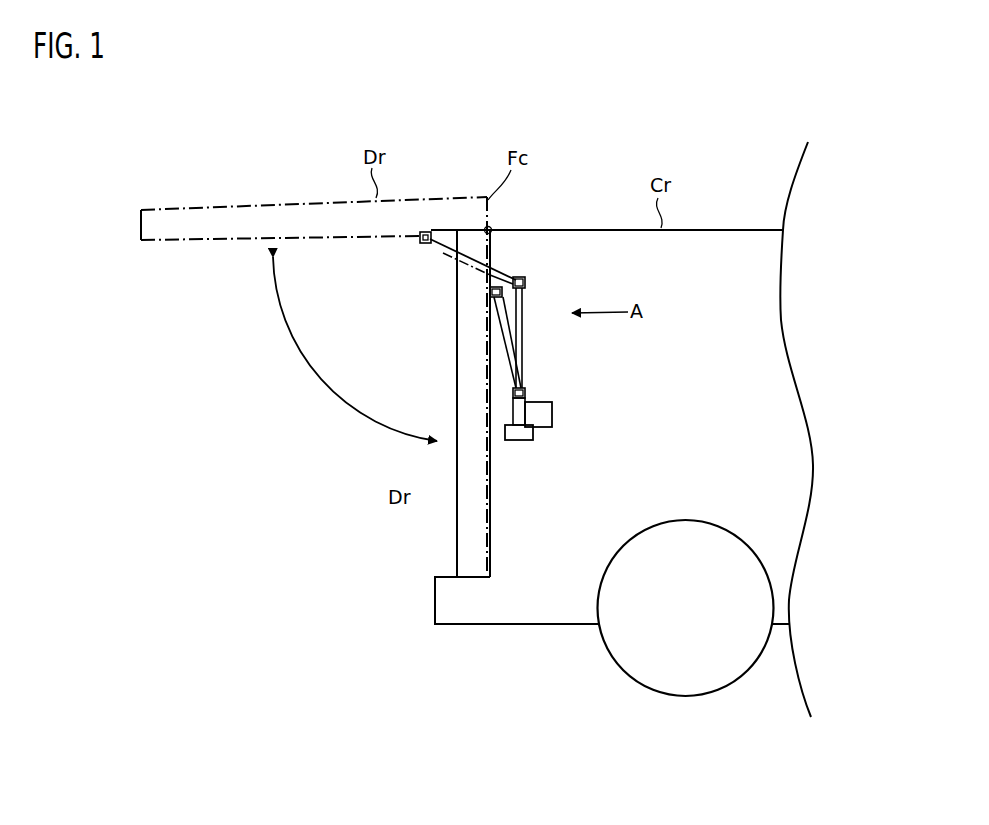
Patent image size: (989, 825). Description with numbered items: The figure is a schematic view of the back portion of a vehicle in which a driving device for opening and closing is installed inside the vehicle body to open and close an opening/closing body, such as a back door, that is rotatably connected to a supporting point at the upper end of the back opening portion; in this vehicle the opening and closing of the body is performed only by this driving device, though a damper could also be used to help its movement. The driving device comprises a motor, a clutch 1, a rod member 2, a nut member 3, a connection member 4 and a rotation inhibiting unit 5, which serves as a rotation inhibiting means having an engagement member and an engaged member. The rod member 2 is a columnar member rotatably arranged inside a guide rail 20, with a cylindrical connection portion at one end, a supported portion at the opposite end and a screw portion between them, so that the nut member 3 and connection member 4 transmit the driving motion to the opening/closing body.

The clutch 1 is at (522, 440).
The rod member 2 is at (520, 366).
The nut member 3 is at (527, 281).
The connection member 4 is at (500, 325).
The rotation inhibiting unit 5 is at (553, 412).
The guide rail 20 is at (526, 338).